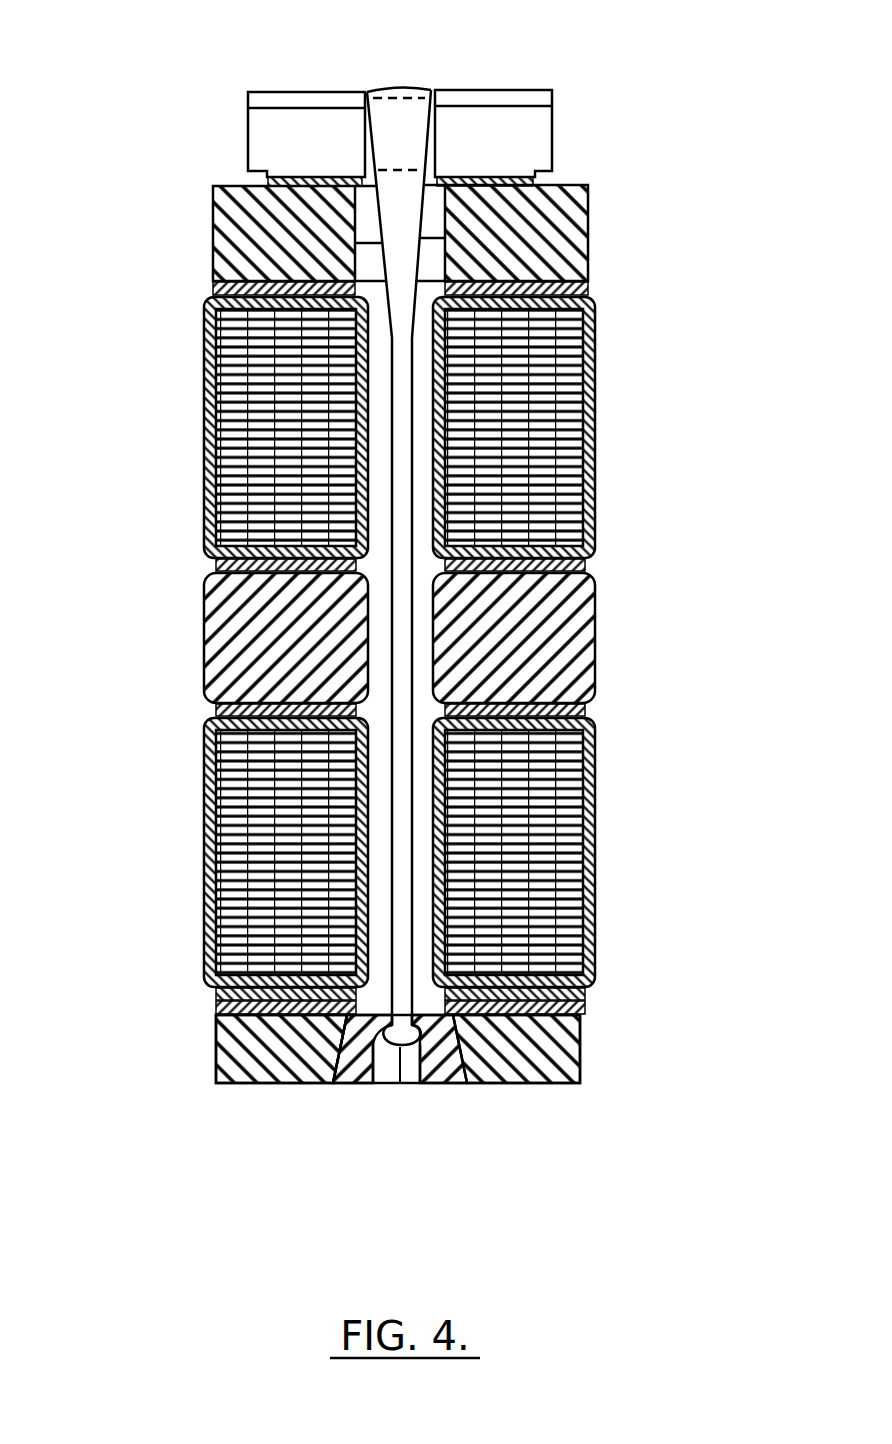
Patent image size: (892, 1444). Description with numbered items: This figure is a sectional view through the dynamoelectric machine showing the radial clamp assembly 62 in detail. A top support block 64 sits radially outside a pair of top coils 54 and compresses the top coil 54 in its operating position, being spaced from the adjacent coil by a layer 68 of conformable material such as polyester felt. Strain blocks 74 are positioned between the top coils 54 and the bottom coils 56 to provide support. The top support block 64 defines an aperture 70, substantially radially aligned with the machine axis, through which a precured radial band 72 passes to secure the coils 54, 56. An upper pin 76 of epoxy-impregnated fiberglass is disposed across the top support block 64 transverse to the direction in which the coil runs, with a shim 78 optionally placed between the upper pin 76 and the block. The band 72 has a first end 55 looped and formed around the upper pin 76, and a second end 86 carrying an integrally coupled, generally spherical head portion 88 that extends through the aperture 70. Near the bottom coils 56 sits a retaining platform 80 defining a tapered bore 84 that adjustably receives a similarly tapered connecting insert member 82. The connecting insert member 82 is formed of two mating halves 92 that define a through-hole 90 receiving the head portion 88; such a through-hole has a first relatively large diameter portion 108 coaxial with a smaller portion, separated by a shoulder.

The top coils 54 is at (205, 497).
The first end 55 is at (400, 137).
The bottom coils 56 is at (247, 847).
The radial clamp assembly 62 is at (427, 72).
The top support block 64 is at (242, 236).
The layer of conformable material 68 is at (215, 290).
The aperture 70 is at (427, 231).
The precured radial band 72 is at (400, 473).
The strain blocks 74 is at (205, 680).
The upper pin 76 is at (280, 140).
The shim 78 is at (538, 182).
The retaining platform 80 is at (555, 1045).
The connecting insert member 82 is at (436, 1083).
The bore 84 is at (312, 1060).
The second end 86 is at (400, 945).
The head portion 88 is at (430, 985).
The through-hole 90 is at (383, 1083).
The mating halves 92 is at (340, 1083).
The first relatively large diameter portion 108 is at (413, 1083).